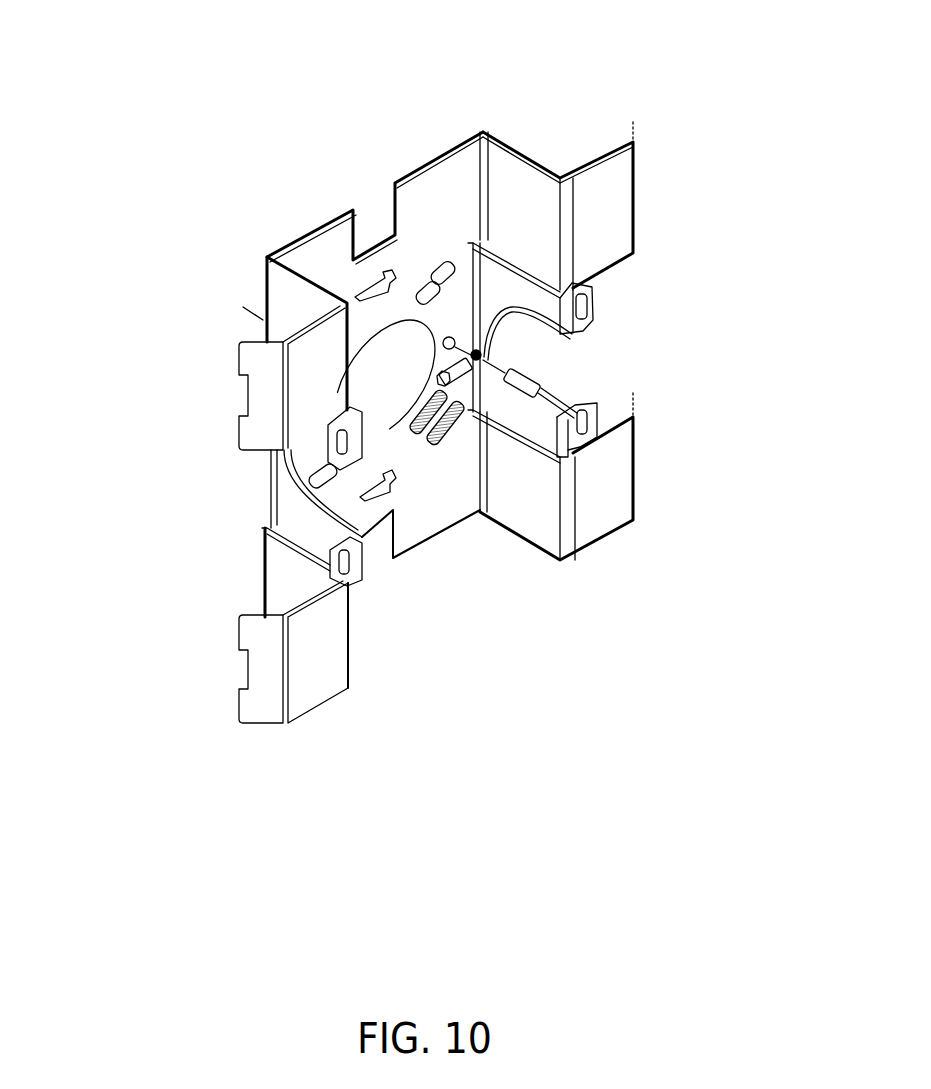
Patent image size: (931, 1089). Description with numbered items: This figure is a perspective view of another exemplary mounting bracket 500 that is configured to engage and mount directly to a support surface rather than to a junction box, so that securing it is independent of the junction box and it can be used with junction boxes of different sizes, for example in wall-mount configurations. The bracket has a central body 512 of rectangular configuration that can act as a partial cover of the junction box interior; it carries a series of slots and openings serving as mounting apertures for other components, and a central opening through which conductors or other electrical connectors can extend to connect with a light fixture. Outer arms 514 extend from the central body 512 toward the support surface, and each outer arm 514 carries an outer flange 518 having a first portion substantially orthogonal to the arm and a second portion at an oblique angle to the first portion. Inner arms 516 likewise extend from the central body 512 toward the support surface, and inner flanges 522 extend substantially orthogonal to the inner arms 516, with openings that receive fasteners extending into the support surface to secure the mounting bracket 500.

The mounting bracket 500 is at (222, 110).
The central body 512 is at (427, 165).
The outer arm 514 is at (312, 310).
The inner arm 516 is at (537, 313).
The outer flange 518 is at (298, 427).
The inner flange 522 is at (592, 292).